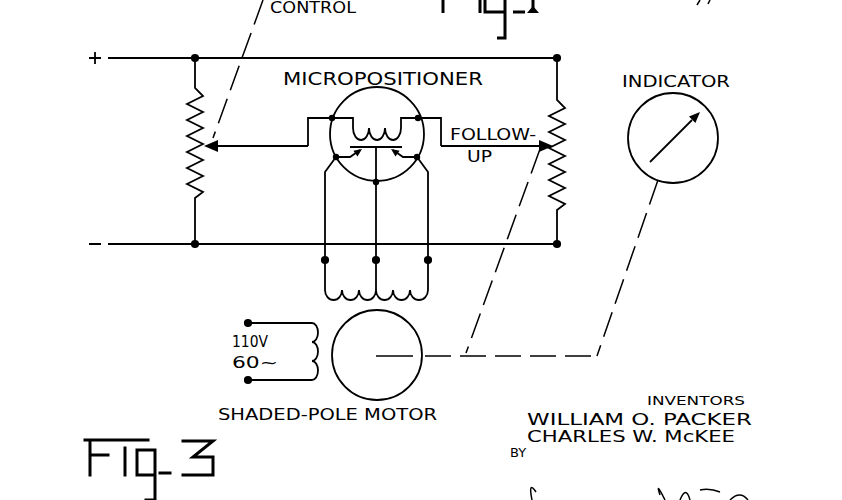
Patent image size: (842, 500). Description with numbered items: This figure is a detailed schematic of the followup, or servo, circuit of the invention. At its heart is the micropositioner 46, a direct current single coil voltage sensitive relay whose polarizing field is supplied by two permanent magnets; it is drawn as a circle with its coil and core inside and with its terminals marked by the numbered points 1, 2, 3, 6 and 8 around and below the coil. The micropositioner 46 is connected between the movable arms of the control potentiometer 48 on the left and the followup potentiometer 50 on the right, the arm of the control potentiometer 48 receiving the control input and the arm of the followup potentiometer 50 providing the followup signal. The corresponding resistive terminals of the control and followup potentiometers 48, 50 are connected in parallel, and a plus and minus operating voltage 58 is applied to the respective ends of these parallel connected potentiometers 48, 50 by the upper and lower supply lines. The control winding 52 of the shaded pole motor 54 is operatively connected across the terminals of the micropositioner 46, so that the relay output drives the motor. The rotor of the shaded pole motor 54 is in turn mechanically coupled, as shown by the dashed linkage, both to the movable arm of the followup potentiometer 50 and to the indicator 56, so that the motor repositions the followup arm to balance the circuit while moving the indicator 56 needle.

The micropositioner 46 is at (380, 118).
The control potentiometer 48 is at (189, 156).
The followup potentiometer 50 is at (560, 186).
The control winding 52 is at (430, 282).
The shaded pole motor 54 is at (420, 378).
The indicator 56 is at (693, 183).
The plus and minus operating voltage 58 is at (98, 134).
The micropositioner terminal 1 is at (328, 111).
The micropositioner terminal 2 is at (423, 157).
The micropositioner terminal 3 is at (422, 111).
The micropositioner terminal 6 is at (327, 157).
The micropositioner terminal 8 is at (381, 189).